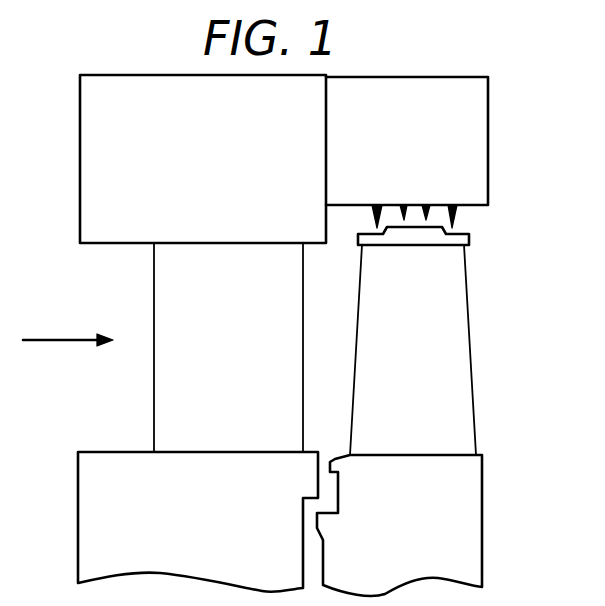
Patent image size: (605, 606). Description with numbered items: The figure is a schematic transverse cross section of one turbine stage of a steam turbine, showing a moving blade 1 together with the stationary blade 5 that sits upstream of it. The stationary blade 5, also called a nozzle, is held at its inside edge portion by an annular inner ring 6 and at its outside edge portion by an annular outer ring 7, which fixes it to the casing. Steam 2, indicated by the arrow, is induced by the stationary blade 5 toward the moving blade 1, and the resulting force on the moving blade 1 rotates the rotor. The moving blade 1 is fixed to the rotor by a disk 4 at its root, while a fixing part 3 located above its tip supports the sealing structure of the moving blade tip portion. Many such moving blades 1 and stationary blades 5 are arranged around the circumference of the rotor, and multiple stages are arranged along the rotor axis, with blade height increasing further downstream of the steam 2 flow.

The moving blade 1 is at (447, 352).
The steam 2 is at (58, 338).
The fixing part 3 is at (472, 130).
The disk 4 is at (460, 500).
The stationary blade (nozzle) 5 is at (172, 382).
The annular inner ring 6 is at (97, 508).
The annular outer ring 7 is at (115, 148).